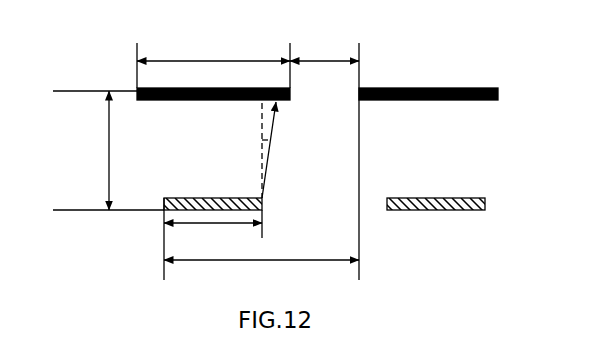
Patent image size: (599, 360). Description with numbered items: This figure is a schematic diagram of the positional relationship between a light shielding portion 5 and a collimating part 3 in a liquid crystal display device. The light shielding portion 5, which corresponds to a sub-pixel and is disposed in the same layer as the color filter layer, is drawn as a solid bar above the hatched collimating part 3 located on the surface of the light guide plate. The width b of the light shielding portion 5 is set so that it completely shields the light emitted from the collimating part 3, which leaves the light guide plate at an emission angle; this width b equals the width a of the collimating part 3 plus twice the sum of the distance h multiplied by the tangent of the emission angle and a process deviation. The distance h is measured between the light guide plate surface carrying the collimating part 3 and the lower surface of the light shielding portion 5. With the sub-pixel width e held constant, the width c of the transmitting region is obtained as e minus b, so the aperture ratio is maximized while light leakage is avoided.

The light shielding portion 5 is at (157, 100).
The collimating part 3 is at (202, 197).
The width of the light shielding portion b is at (213, 50).
The width of a transmitting region c is at (324, 50).
The distance between the light guide plate surface and the lower surface of the ligh h is at (98, 150).
The width of the collimating part a is at (213, 236).
The width of the sub-pixel e is at (261, 271).